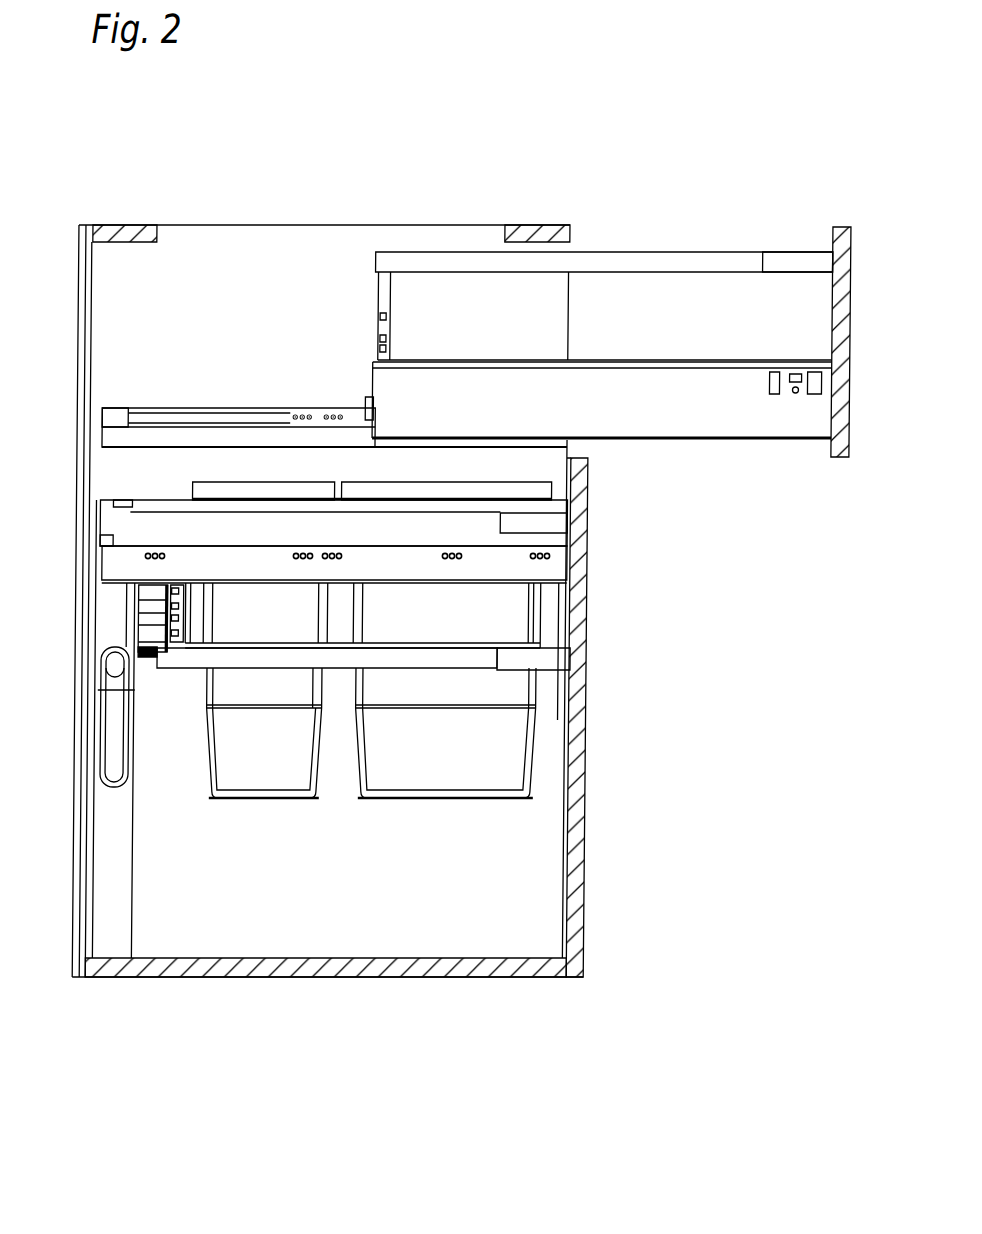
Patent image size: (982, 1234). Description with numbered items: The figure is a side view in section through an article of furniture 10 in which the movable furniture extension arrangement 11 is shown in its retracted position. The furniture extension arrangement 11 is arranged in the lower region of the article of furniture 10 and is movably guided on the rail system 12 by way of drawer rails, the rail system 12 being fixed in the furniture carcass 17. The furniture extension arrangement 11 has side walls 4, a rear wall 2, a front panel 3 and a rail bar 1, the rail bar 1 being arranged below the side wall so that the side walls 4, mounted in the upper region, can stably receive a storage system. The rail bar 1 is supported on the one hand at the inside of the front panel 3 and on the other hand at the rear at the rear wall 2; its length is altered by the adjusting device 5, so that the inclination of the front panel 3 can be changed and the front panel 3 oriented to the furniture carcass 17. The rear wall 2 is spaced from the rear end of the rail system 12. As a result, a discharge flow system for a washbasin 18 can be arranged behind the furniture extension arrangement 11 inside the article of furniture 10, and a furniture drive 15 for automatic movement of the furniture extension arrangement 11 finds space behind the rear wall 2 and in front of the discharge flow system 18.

The rail bar 1 is at (343, 658).
The rear wall 2 is at (182, 645).
The front panel 3 is at (581, 618).
The side wall 4 is at (147, 530).
The adjusting device 5 is at (546, 657).
The article of furniture 10 is at (495, 198).
The furniture extension arrangement 11 is at (710, 543).
The rail system 12 is at (137, 567).
The furniture drive 15 is at (158, 620).
The furniture carcass 17 is at (469, 968).
The discharge flow system for a washbasin 18 is at (116, 857).